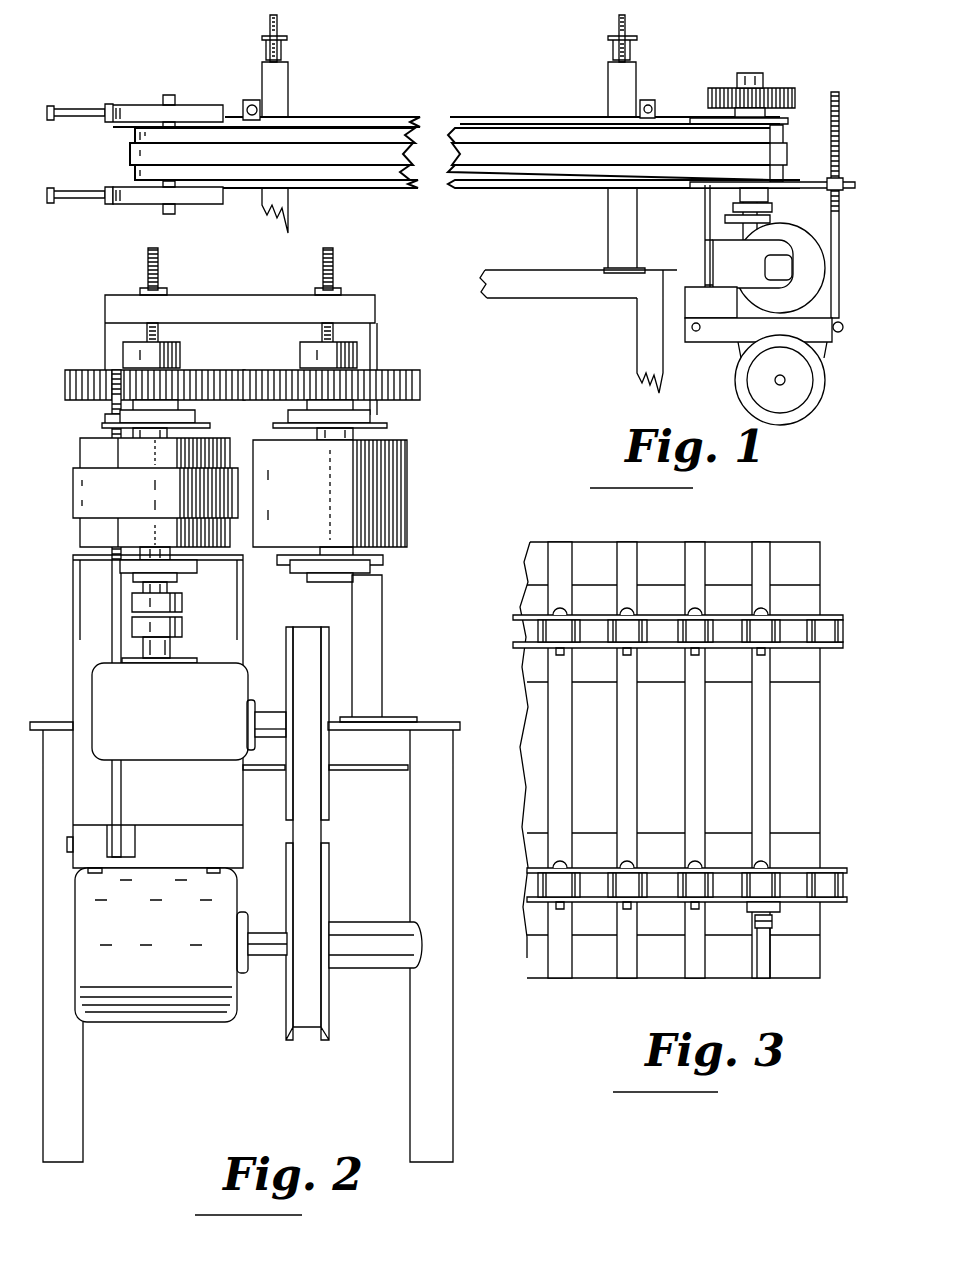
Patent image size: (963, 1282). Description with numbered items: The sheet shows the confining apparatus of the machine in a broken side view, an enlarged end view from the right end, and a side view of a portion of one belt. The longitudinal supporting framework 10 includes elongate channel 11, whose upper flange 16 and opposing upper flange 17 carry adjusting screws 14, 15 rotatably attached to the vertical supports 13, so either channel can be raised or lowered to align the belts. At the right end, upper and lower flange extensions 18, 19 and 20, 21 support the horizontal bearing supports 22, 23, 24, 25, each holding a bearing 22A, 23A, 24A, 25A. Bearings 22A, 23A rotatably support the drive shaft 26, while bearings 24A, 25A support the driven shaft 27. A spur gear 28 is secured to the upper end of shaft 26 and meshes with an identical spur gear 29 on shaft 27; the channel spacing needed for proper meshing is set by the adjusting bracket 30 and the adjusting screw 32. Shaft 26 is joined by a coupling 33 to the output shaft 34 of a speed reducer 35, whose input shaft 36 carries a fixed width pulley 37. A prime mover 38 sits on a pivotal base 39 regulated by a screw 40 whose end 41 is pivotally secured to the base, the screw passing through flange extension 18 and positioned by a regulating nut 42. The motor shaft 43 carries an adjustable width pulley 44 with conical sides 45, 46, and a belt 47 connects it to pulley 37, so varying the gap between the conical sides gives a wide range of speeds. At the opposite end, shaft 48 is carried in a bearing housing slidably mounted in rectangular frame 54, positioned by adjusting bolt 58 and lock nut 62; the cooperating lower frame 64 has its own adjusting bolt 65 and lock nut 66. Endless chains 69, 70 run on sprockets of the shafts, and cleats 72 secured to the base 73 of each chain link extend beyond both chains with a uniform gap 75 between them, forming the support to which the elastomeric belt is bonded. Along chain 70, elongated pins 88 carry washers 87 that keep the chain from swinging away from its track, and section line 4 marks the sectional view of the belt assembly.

In FIG. 1, the longitudinal supporting framework 10 is at (673, 104).
In FIG. 1, the channel 11 is at (478, 117).
In FIG. 1, the vertical support 13 is at (632, 77).
In FIG. 2, the vertical support 13 is at (377, 340).
In FIG. 1, the adjusting screw 14 is at (278, 27).
In FIG. 2, the adjusting screw 14 is at (159, 262).
In FIG. 2, the adjusting screw 15 is at (334, 262).
In FIG. 1, the upper flange 16 is at (560, 118).
In FIG. 2, the upper flange 16 is at (206, 426).
In FIG. 2, the upper flange 17 is at (290, 418).
In FIG. 1, the upper flange extension 18 is at (786, 120).
In FIG. 2, the upper flange extension 18 is at (106, 426).
In FIG. 2, the lower flange extension 19 is at (387, 424).
In FIG. 1, the upper flange extension 20 is at (772, 188).
In FIG. 2, the upper flange extension 20 is at (115, 540).
In FIG. 2, the lower flange extension 21 is at (385, 556).
In FIG. 1, the bearing support 22 is at (783, 118).
In FIG. 2, the bearing support 22 is at (193, 421).
In FIG. 2, the bearing 22A is at (173, 401).
In FIG. 1, the bearing support 23 is at (772, 196).
In FIG. 2, the bearing support 23 is at (230, 568).
In FIG. 2, the bearing 23A is at (175, 579).
In FIG. 2, the bearing support 24 is at (373, 410).
In FIG. 2, the bearing 24A is at (356, 401).
In FIG. 2, the bearing support 25 is at (373, 570).
In FIG. 2, the bearing 25A is at (354, 578).
In FIG. 1, the drive shaft 26 is at (712, 105).
In FIG. 2, the drive shaft 26 is at (143, 583).
In FIG. 2, the driven shaft 27 is at (378, 432).
In FIG. 1, the spur gear 28 is at (709, 93).
In FIG. 2, the spur gear 28 is at (105, 370).
In FIG. 2, the spur gear 29 is at (394, 372).
In FIG. 1, the adjusting bracket 30 is at (648, 100).
In FIG. 1, the adjusting screw 32 is at (650, 112).
In FIG. 1, the coupling 33 is at (735, 220).
In FIG. 2, the coupling 33 is at (133, 628).
In FIG. 2, the output shaft 34 is at (172, 648).
In FIG. 1, the speed reducer 35 is at (752, 279).
In FIG. 2, the speed reducer 35 is at (181, 729).
In FIG. 2, the input shaft 36 is at (265, 713).
In FIG. 1, the pulley 37 is at (811, 233).
In FIG. 2, the pulley 37 is at (285, 630).
In FIG. 1, the prime mover 38 is at (760, 388).
In FIG. 2, the prime mover 38 is at (170, 939).
In FIG. 1, the pivotal base 39 is at (725, 330).
In FIG. 2, the pivotal base 39 is at (170, 845).
In FIG. 2, the screw 40 is at (108, 393).
In FIG. 1, the end of screw 41 is at (839, 118).
In FIG. 2, the end of screw 41 is at (118, 825).
In FIG. 1, the regulating nut 42 is at (840, 178).
In FIG. 2, the regulating nut 42 is at (106, 419).
In FIG. 2, the shaft of prime mover 43 is at (265, 957).
In FIG. 1, the adjustable width pulley 44 is at (808, 418).
In FIG. 2, the adjustable width pulley 44 is at (334, 880).
In FIG. 2, the conical side 45 is at (285, 896).
In FIG. 2, the conical side 46 is at (330, 908).
In FIG. 2, the belt 47 is at (303, 628).
In FIG. 1, the shaft 48 is at (172, 97).
In FIG. 1, the frame 54 is at (212, 106).
In FIG. 1, the adjusting bolt 58 is at (53, 107).
In FIG. 1, the lock nut 62 is at (110, 107).
In FIG. 1, the lower rectangular frame 64 is at (140, 205).
In FIG. 1, the adjusting bolt 65 is at (52, 188).
In FIG. 1, the lock nut 66 is at (108, 187).
In FIG. 3, the chain 69 is at (822, 616).
In FIG. 3, the chain 70 is at (828, 903).
In FIG. 3, the cleat 72 is at (606, 769).
In FIG. 3, the base of chain link 73 is at (802, 595).
In FIG. 3, the gap 75 is at (628, 968).
In FIG. 3, the washer 87 is at (748, 906).
In FIG. 3, the elongated pin 88 is at (773, 923).
In FIG. 3, the section line 4 is at (843, 703).